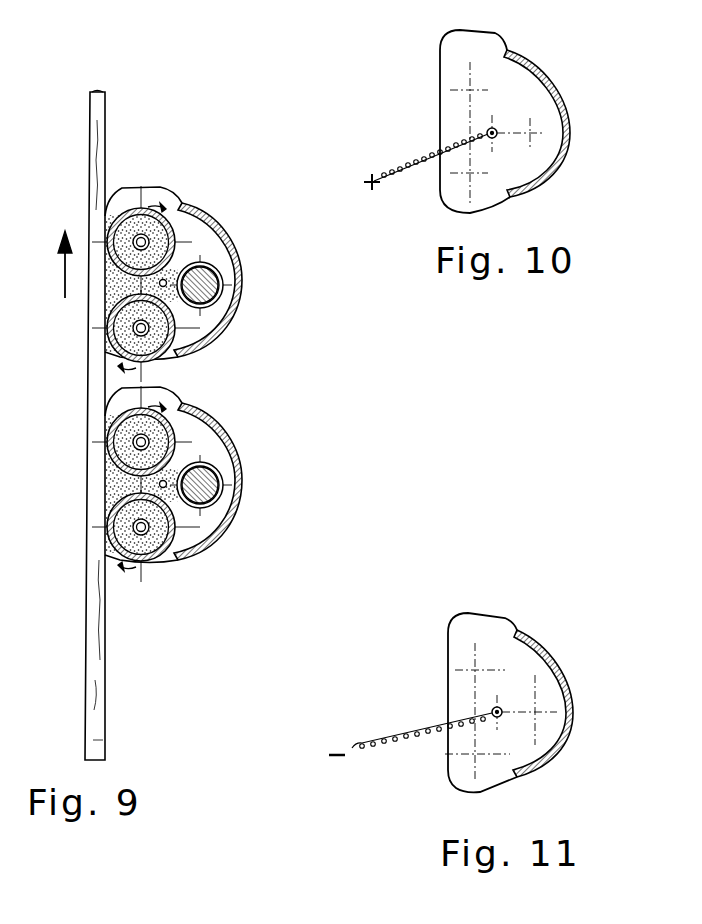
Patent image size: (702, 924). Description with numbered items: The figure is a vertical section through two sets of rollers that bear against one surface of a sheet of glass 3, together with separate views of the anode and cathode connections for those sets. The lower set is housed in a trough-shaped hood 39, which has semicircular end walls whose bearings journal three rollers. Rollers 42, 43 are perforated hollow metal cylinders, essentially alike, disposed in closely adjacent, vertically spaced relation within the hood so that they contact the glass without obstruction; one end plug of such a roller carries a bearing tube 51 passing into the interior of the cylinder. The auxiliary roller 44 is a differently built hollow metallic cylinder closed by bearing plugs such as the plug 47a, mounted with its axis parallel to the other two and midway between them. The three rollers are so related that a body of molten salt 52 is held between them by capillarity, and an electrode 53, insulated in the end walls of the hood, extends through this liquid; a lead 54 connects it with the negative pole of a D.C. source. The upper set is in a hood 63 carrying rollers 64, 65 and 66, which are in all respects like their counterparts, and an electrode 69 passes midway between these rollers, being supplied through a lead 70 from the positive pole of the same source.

In FIG. 9, the sheet of glass 3 is at (95, 673).
In FIG. 9, the hood 39 is at (194, 553).
In FIG. 11, the hood 39 is at (553, 660).
In FIG. 9, the roller 42 is at (172, 423).
In FIG. 9, the roller 43 is at (146, 562).
In FIG. 9, the auxiliary roller 44 is at (220, 497).
In FIG. 9, the bearing plug 47a is at (208, 478).
In FIG. 9, the bearing tube 51 is at (136, 444).
In FIG. 9, the body of molten salt 52 is at (116, 487).
In FIG. 9, the electrode 53 is at (166, 479).
In FIG. 11, the electrode 53 is at (499, 707).
In FIG. 11, the lead 54 is at (389, 735).
In FIG. 9, the hood 63 is at (191, 213).
In FIG. 10, the hood 63 is at (552, 166).
In FIG. 9, the roller 64 is at (131, 207).
In FIG. 9, the roller 65 is at (105, 338).
In FIG. 9, the roller 66 is at (212, 300).
In FIG. 9, the electrode 69 is at (168, 276).
In FIG. 10, the electrode 69 is at (516, 122).
In FIG. 10, the lead 70 is at (418, 156).